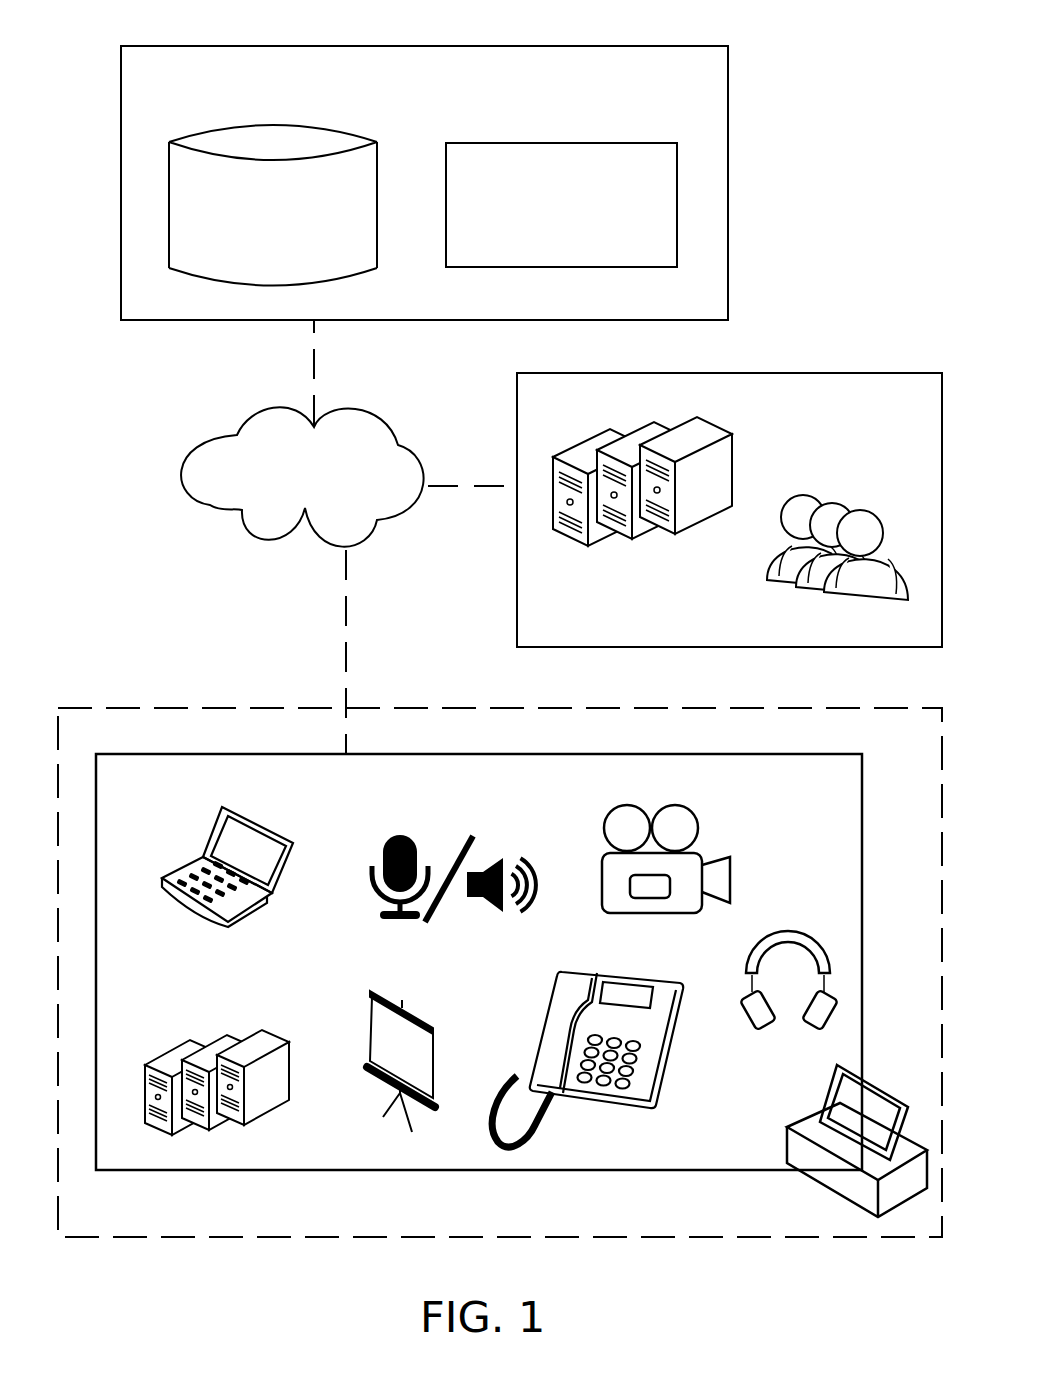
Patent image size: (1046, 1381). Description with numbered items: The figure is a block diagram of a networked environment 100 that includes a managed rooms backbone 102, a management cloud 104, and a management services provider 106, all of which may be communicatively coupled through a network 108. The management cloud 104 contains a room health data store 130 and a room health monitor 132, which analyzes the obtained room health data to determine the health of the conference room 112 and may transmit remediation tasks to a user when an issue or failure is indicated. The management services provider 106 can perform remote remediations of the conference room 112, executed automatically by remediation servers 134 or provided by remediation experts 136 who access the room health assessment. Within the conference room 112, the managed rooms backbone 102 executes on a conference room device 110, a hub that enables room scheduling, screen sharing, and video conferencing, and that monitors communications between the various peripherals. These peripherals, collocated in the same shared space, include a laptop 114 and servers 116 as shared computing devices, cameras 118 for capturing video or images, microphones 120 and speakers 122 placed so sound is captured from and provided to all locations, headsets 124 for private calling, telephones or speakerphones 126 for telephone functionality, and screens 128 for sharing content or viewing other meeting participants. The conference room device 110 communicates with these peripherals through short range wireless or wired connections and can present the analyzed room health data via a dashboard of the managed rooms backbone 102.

The networked environment 100 is at (505, 1277).
The managed rooms backbone 102 is at (152, 754).
The management cloud 104 is at (216, 46).
The management services provider 106 is at (817, 373).
The network 108 is at (218, 507).
The conference room device 110 is at (828, 1185).
The conference room 112 is at (147, 708).
The laptop 114 is at (210, 830).
The servers 116 is at (210, 1040).
The cameras 118 is at (692, 812).
The microphones 120 is at (403, 835).
The speakers 122 is at (498, 858).
The headsets 124 is at (770, 937).
The telephones or speakerphones 126 is at (613, 1093).
The screens 128 is at (377, 1017).
The room health data store 130 is at (273, 124).
The room health monitor 132 is at (577, 143).
The remediation servers 134 is at (695, 515).
The remediation experts 136 is at (832, 503).